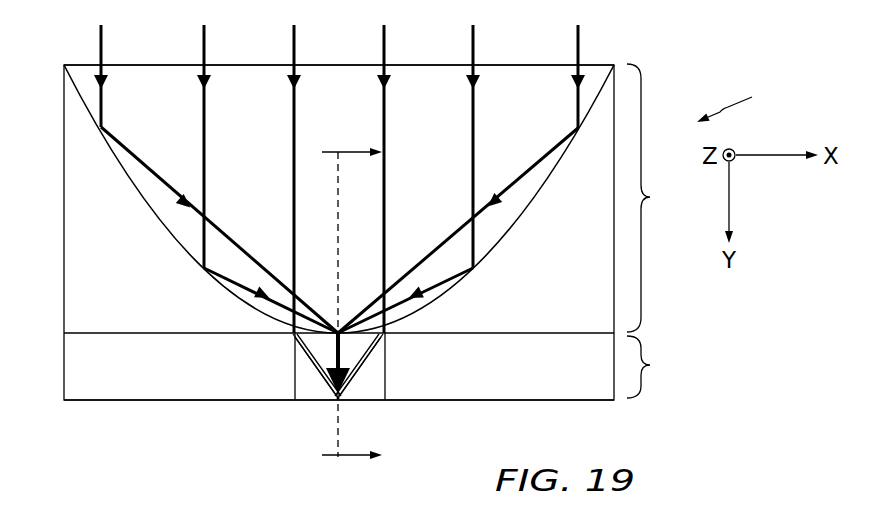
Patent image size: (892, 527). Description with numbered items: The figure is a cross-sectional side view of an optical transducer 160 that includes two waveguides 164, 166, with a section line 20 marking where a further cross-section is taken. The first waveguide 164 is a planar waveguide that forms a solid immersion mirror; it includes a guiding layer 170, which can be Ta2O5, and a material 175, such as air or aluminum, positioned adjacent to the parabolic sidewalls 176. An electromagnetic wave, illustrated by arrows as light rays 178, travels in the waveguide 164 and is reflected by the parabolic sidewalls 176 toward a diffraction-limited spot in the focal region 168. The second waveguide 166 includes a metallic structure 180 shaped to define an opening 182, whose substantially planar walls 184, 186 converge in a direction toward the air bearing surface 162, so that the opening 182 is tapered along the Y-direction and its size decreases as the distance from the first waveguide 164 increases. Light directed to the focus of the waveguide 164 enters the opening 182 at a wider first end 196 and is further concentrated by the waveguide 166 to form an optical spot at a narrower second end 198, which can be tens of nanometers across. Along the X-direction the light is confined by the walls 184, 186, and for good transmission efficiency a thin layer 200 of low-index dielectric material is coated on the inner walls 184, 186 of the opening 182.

The section line 20 is at (353, 306).
The optical transducer 160 is at (744, 102).
The air bearing surface 162 is at (552, 400).
The waveguide 164 is at (660, 198).
The waveguide 166 is at (661, 367).
The focal region 168 is at (342, 330).
The guiding layer 170 is at (525, 90).
The material 175 is at (600, 298).
The parabolic sidewalls 176 is at (505, 241).
The light rays 178 is at (384, 55).
The metallic structure 180 is at (85, 388).
The opening 182 is at (325, 365).
The wall 184 is at (305, 372).
The wall 186 is at (362, 370).
The first end 196 is at (338, 333).
The second end 198 is at (340, 400).
The thin layer 200 is at (300, 353).